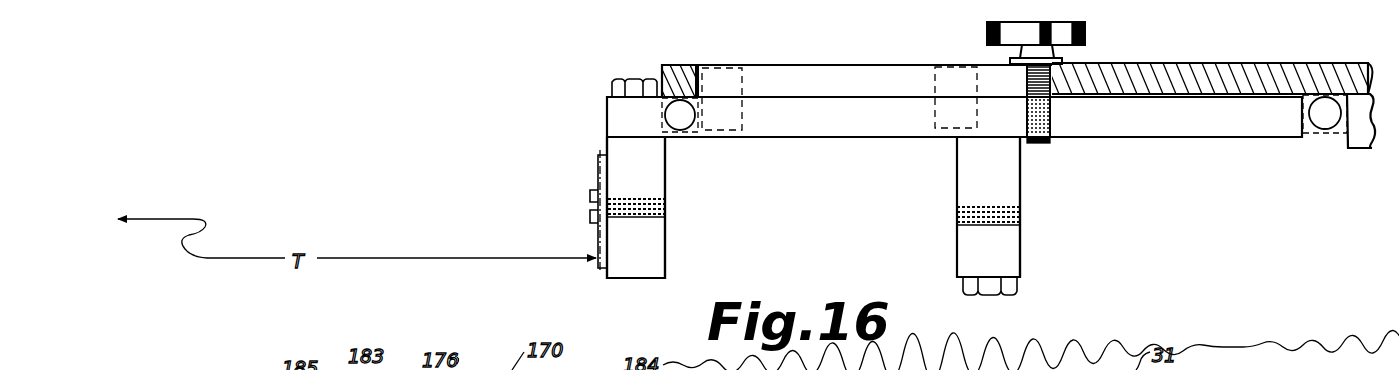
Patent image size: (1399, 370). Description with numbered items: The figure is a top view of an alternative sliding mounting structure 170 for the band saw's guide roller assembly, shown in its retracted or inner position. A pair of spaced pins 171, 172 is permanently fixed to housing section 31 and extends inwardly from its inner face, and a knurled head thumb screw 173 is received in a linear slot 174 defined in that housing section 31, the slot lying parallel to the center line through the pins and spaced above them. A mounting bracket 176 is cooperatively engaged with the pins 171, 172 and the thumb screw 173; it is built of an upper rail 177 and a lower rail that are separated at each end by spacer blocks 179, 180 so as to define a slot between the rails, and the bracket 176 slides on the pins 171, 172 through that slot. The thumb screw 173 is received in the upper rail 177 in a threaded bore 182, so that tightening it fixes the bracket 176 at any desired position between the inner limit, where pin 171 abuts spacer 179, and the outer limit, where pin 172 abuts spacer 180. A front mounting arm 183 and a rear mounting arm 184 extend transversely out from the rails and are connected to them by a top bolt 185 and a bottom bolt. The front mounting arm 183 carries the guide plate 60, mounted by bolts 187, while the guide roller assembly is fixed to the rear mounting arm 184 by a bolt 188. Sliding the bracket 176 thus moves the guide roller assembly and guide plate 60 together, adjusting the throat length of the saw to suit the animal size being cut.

The housing section 31 is at (1150, 68).
The guide plate 60 is at (594, 170).
The mounting structure 170 is at (1024, 168).
The pin 171 is at (733, 78).
The pin 172 is at (940, 70).
The knurled head thumb screw 173 is at (1085, 30).
The linear slot 174 is at (852, 52).
The mounting bracket 176 is at (831, 130).
The upper rail 177 is at (1167, 122).
The spacer block 179 is at (702, 98).
The spacer block 180 is at (1292, 140).
The threaded bore 182 is at (1050, 115).
The front mounting arm 183 is at (630, 265).
The rear mounting arm 184 is at (1012, 262).
The top bolt 185 is at (632, 88).
The bolt 187 is at (590, 210).
The bolt 188 is at (1022, 216).